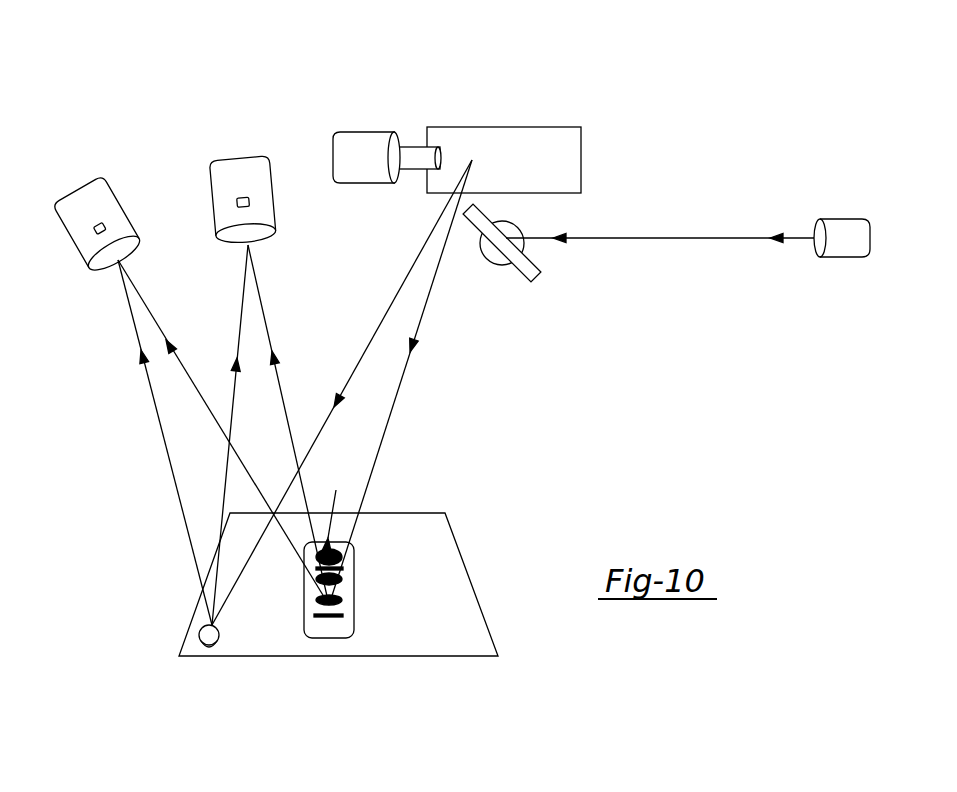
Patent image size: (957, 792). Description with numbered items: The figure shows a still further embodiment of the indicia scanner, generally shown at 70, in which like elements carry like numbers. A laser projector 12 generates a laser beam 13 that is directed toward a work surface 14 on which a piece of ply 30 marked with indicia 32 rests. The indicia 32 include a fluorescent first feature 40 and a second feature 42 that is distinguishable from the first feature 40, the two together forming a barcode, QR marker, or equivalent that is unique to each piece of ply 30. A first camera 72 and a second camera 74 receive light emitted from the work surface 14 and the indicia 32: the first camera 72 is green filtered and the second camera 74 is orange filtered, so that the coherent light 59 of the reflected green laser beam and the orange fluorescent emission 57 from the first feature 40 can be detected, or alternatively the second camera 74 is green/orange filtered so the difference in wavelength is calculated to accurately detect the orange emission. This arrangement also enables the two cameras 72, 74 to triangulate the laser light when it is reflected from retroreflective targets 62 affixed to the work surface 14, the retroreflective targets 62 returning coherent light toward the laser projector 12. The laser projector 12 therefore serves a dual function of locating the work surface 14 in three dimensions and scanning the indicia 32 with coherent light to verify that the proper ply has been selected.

The further embodiment 70 is at (342, 103).
The laser projector 12 is at (834, 248).
The laser beam 13 is at (622, 238).
The first camera 72 is at (230, 188).
The second camera 74 is at (78, 215).
The fluorescent emission 57 is at (197, 397).
The coherent light 59 is at (236, 334).
The work surface 14 is at (405, 617).
The piece of ply 30 is at (355, 572).
The indicia 32 is at (335, 507).
The first feature 40 is at (317, 599).
The second feature 42 is at (348, 608).
The retroreflective targets 62 is at (213, 650).